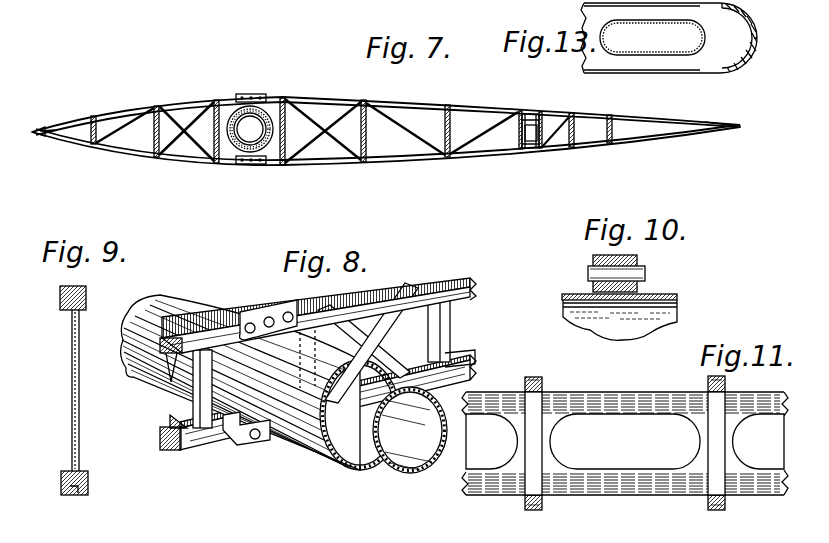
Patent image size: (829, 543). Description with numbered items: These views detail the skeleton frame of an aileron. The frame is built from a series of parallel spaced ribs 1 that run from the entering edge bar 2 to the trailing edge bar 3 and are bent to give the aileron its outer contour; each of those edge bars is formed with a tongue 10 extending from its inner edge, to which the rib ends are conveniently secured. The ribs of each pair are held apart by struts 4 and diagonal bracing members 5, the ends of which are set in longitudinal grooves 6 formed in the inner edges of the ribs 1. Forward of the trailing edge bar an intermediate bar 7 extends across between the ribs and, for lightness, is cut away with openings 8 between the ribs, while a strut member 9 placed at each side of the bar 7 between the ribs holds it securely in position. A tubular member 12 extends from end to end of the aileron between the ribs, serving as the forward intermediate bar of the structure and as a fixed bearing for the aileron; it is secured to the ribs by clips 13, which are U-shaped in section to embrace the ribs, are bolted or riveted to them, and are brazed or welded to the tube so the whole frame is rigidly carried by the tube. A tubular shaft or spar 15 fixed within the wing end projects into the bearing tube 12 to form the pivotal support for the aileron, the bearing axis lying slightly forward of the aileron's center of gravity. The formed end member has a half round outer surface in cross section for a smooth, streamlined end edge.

In FIG. 7, the rib 1 is at (323, 100).
In FIG. 9, the rib 1 is at (87, 297).
In FIG. 10, the rib 1 is at (593, 257).
In FIG. 11, the rib 1 is at (533, 377).
In FIG. 7, the entering edge bar 2 is at (35, 130).
In FIG. 7, the trailing edge bar 3 is at (728, 131).
In FIG. 8, the trailing edge bar 3 is at (335, 538).
In FIG. 7, the strut 4 is at (152, 108).
In FIG. 9, the strut 4 is at (71, 384).
In FIG. 8, the strut 4 is at (193, 390).
In FIG. 7, the diagonal bracing member 5 is at (125, 140).
In FIG. 8, the diagonal bracing member 5 is at (363, 317).
In FIG. 9, the longitudinal groove 6 is at (88, 479).
In FIG. 8, the longitudinal groove 6 is at (470, 367).
In FIG. 11, the longitudinal groove 6 is at (542, 389).
In FIG. 7, the intermediate bar 7 is at (533, 114).
In FIG. 13, the intermediate bar 7 is at (662, 66).
In FIG. 11, the intermediate bar 7 is at (603, 403).
In FIG. 7, the opening 8 is at (529, 151).
In FIG. 13, the opening 8 is at (652, 37).
In FIG. 11, the opening 8 is at (625, 441).
In FIG. 7, the strut member 9 is at (516, 134).
In FIG. 11, the strut member 9 is at (532, 447).
In FIG. 7, the tongue 10 is at (53, 142).
In FIG. 13, the tongue 10 is at (752, 12).
In FIG. 7, the tubular member 12 is at (232, 150).
In FIG. 8, the tubular member 12 is at (313, 450).
In FIG. 10, the tubular member 12 is at (668, 295).
In FIG. 7, the clip 13 is at (253, 94).
In FIG. 10, the clip 13 is at (637, 261).
In FIG. 7, the tubular shaft or spar 15 is at (278, 158).
In FIG. 8, the tubular shaft or spar 15 is at (403, 452).